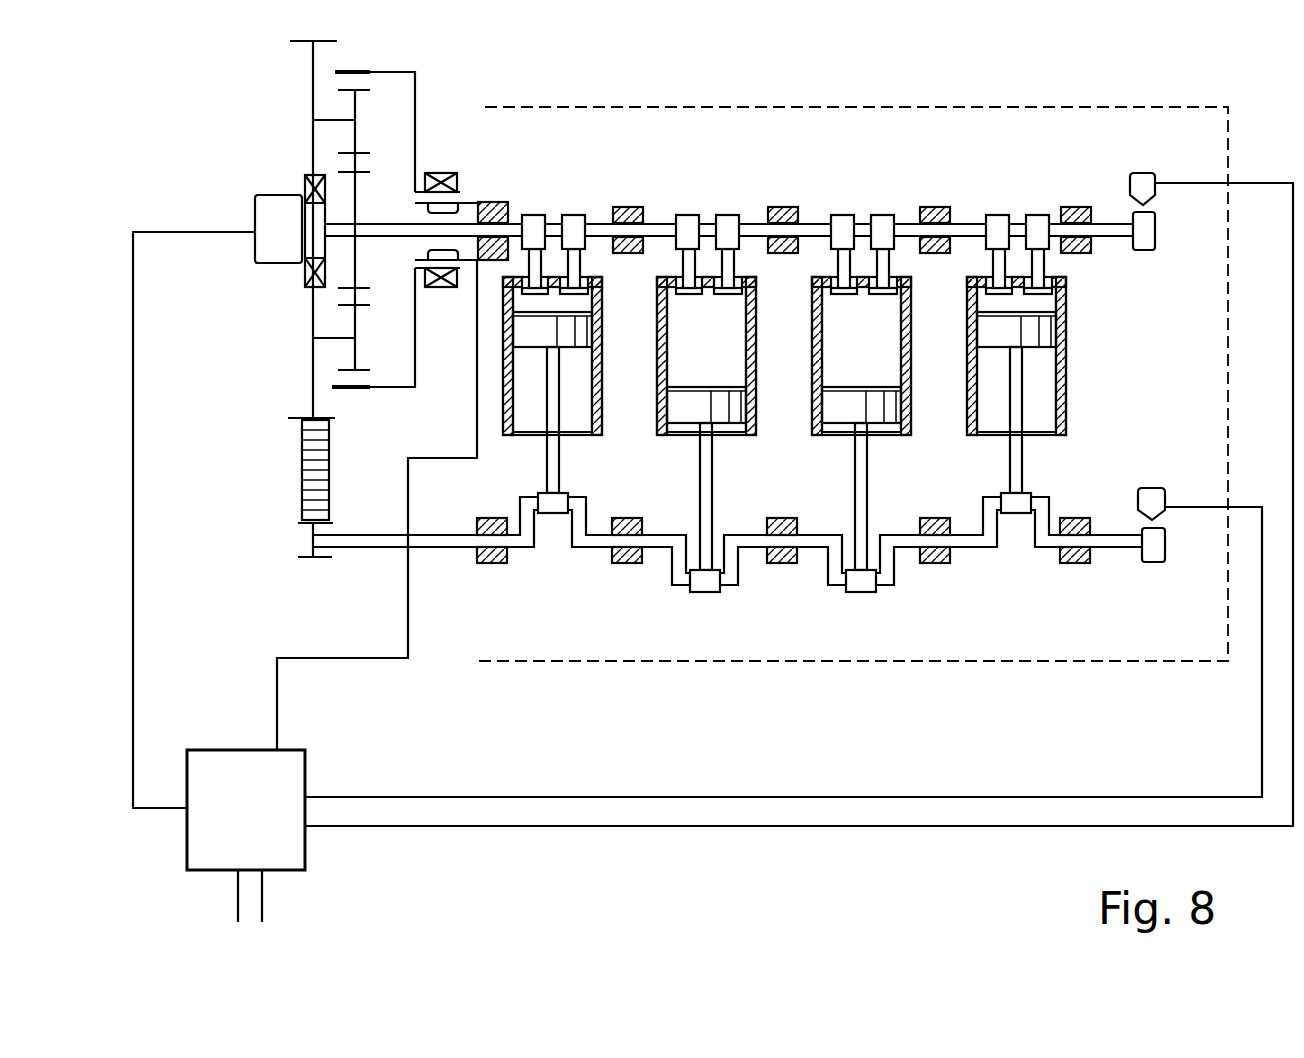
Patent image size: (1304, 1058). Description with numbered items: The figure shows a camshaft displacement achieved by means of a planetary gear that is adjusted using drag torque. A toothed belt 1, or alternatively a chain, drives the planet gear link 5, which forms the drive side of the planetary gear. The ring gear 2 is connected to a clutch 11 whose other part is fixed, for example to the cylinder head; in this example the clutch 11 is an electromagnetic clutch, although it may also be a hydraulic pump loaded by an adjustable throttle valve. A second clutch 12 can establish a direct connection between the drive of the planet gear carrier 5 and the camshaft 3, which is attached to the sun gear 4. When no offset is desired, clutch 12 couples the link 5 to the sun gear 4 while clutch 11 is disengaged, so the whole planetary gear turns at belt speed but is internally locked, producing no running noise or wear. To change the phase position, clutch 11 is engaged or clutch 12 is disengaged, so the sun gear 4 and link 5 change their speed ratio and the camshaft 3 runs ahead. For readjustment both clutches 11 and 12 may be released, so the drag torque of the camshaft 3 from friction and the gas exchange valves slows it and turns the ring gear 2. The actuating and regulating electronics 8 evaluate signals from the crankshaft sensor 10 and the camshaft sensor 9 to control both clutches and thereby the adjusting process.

The toothed belt 1 is at (302, 492).
The ring gear 2 is at (356, 72).
The camshaft 3 is at (600, 222).
The sun gear 4 is at (357, 204).
The planet gear link 5 is at (313, 322).
The actuating and regulating electronics 8 is at (257, 828).
The camshaft sensor 9 is at (1140, 185).
The crankshaft sensor 10 is at (1150, 498).
The clutch 11 is at (463, 171).
The clutch 12 is at (305, 193).